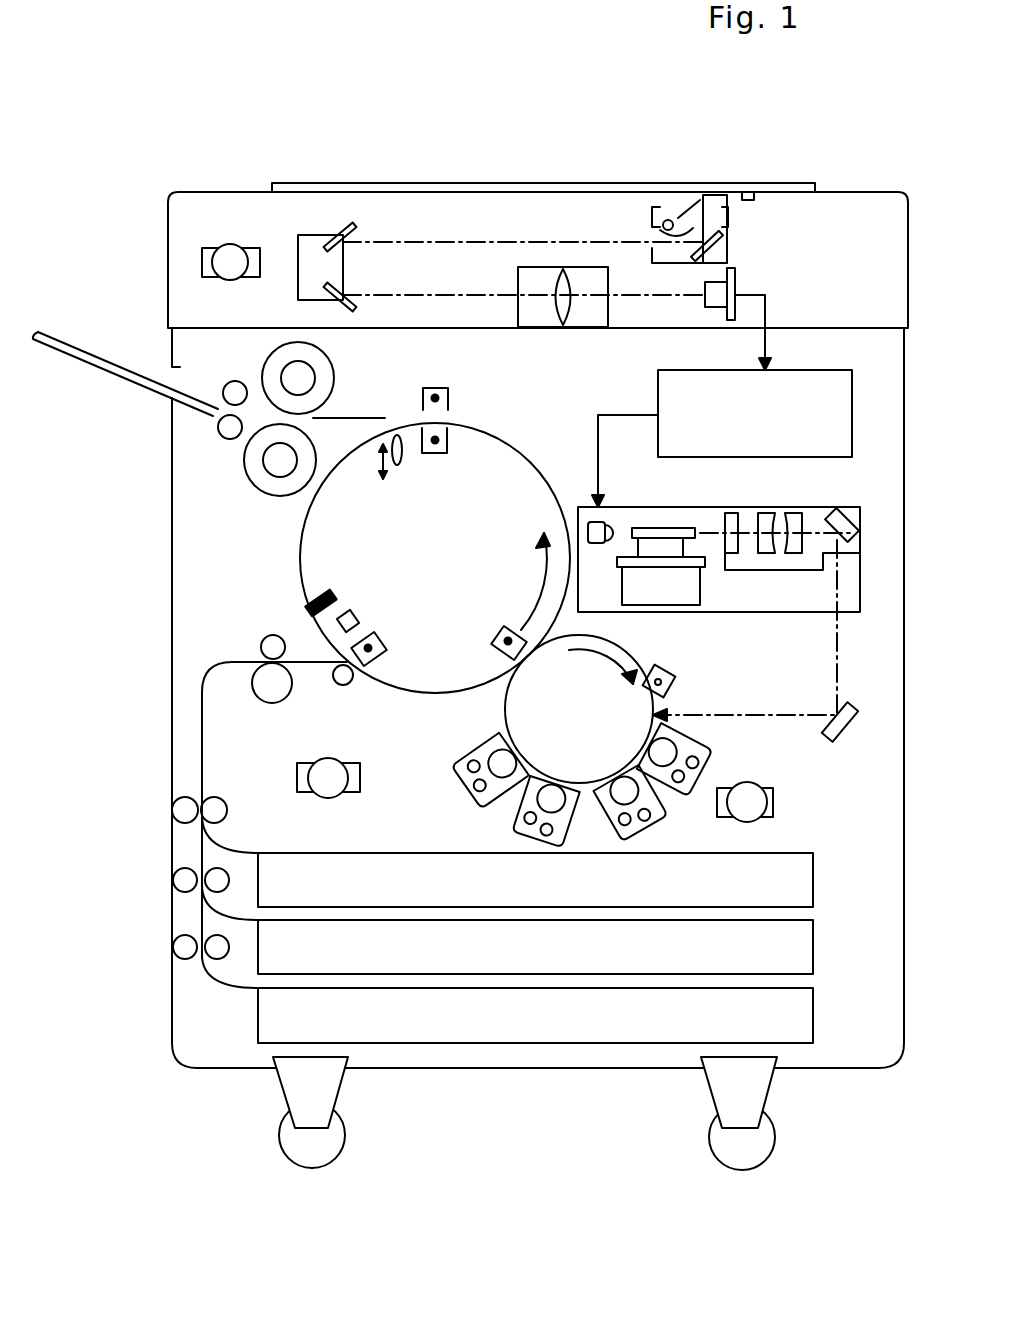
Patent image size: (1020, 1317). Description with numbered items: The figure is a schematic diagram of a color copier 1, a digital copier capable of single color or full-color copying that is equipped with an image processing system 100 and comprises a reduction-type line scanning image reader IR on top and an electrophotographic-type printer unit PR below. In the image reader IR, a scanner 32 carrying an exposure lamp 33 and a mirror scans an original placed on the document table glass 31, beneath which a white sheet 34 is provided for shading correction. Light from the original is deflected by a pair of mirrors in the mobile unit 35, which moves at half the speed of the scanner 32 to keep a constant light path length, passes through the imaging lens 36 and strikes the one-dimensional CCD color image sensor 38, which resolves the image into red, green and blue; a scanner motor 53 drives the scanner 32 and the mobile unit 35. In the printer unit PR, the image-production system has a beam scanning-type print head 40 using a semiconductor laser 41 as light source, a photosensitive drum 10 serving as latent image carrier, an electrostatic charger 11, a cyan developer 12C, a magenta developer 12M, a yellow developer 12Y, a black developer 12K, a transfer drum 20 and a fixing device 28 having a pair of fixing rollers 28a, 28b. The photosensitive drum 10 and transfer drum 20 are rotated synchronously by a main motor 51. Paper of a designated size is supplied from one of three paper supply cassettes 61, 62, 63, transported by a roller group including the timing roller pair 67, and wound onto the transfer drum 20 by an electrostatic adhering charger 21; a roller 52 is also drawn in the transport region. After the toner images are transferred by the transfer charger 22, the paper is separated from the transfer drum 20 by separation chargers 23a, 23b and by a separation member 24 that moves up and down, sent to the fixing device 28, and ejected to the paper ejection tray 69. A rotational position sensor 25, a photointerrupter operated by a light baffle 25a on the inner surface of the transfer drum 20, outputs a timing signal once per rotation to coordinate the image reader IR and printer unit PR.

The color copier 1 is at (312, 52).
The image reader IR is at (168, 261).
The printer unit PR is at (170, 644).
The document table glass 31 is at (512, 188).
The white sheet 34 is at (743, 191).
The scanner motor 53 is at (248, 278).
The mobile unit 35 is at (298, 249).
The imaging lens 36 is at (518, 271).
The exposure lamp 33 is at (652, 219).
The scanner 32 is at (730, 221).
The color image sensor 38 is at (735, 276).
The image processing system 100 is at (658, 393).
The print head 40 is at (742, 612).
The semiconductor laser 41 is at (610, 526).
The paper ejection tray 69 is at (90, 368).
The fixing roller 28a is at (262, 363).
The fixing roller 28b is at (243, 463).
The fixing device 28 is at (407, 369).
The transfer drum 20 is at (300, 548).
The separation charger 23a is at (428, 388).
The separation charger 23b is at (433, 455).
The separation member 24 is at (397, 466).
The light baffle 25a is at (333, 594).
The rotational position sensor 25 is at (355, 614).
The electrostatic adhering charger 21 is at (383, 661).
The transfer charger 22 is at (507, 630).
The timing roller pair 67 is at (256, 690).
The main motor 51 is at (328, 758).
The photosensitive drum 10 is at (507, 711).
The electrostatic charger 11 is at (672, 680).
The black developer 12K is at (703, 747).
The cyan developer 12C is at (470, 797).
The magenta developer 12M is at (543, 834).
The yellow developer 12Y is at (622, 832).
The paper feed roller 52 is at (773, 801).
The paper supply cassette 61 is at (815, 883).
The paper supply cassette 62 is at (815, 952).
The paper supply cassette 63 is at (815, 1022).